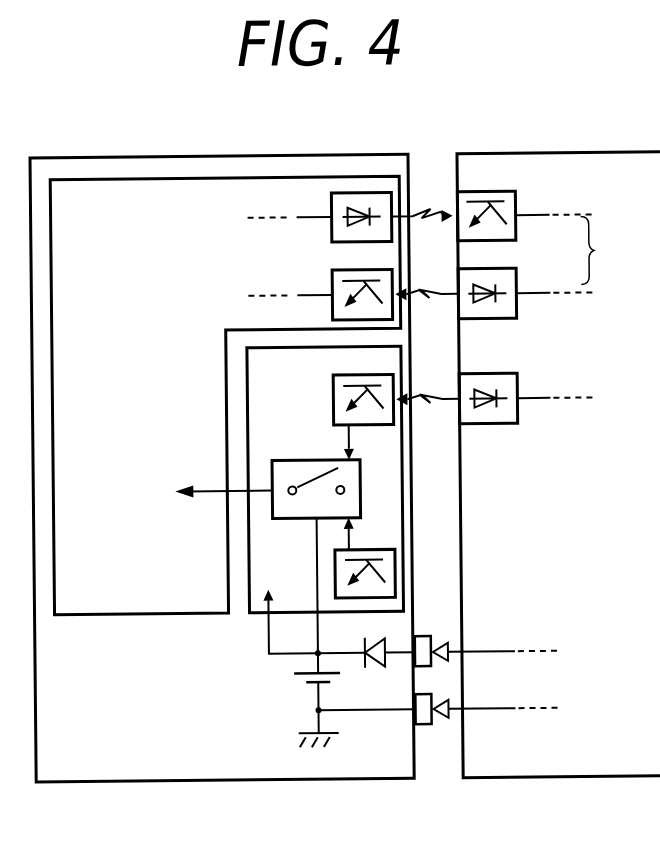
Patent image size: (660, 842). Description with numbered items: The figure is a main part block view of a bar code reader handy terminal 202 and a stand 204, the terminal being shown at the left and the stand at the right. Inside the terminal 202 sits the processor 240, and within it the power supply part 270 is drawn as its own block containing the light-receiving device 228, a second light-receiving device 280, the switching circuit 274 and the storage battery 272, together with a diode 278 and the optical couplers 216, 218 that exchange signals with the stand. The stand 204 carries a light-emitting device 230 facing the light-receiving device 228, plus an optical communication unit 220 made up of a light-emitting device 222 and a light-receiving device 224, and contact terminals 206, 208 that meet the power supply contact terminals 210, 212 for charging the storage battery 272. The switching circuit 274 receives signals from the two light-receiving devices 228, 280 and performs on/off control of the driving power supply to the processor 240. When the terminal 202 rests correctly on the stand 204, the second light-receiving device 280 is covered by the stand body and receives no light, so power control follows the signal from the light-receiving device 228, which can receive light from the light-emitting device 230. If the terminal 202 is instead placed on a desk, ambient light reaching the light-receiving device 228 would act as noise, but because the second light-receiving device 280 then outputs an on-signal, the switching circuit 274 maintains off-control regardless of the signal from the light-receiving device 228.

The bar code reader handy terminal 202 is at (191, 158).
The stand 204 is at (508, 158).
The processor 240 is at (262, 180).
The light emitting element 218 is at (352, 196).
The light receiving element 216 is at (332, 292).
The light receiving element 224 is at (516, 228).
The light emitting element 222 is at (517, 290).
The optical communication unit 220 is at (612, 250).
The light-emitting device 230 is at (517, 384).
The light-receiving device 228 is at (332, 390).
The switching circuit 274 is at (296, 462).
The power supply part 270 is at (399, 477).
The second light-receiving device 280 is at (365, 549).
The terminal 206 is at (422, 635).
The terminal 208 is at (421, 728).
The contact terminal for power supply 210 is at (472, 634).
The contact terminal for power supply 212 is at (472, 692).
The storage battery 272 is at (298, 682).
The diode 278 is at (377, 663).